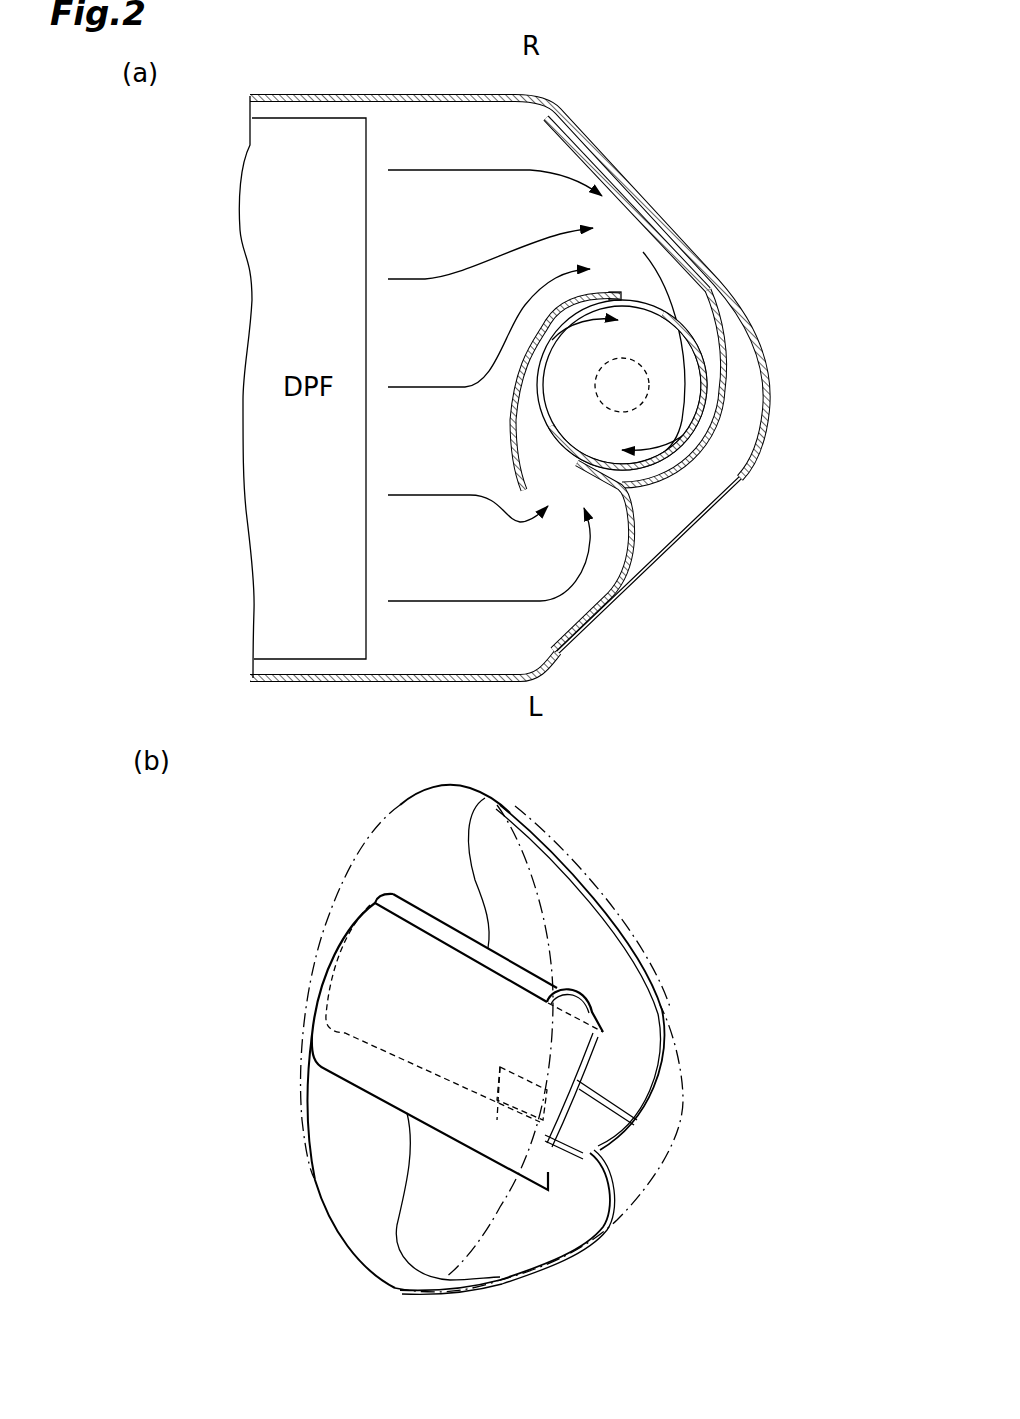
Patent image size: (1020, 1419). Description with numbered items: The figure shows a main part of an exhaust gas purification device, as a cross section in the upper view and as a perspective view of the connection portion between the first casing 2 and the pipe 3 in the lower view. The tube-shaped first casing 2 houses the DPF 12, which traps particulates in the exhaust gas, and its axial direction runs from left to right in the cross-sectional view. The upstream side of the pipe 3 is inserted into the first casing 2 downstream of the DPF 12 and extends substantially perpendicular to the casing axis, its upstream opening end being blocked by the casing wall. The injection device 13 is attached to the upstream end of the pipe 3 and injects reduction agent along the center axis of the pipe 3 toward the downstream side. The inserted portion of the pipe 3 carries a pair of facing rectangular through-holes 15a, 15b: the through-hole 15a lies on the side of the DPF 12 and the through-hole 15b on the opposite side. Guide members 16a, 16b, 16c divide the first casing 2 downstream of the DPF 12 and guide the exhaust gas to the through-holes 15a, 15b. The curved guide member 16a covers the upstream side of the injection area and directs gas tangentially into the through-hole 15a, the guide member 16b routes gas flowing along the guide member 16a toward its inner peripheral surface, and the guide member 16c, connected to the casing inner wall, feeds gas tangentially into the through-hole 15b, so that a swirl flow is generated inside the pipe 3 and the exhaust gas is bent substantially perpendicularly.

The first casing 2 is at (424, 93).
The pipe 3 is at (646, 292).
The DPF 12 is at (307, 150).
The injection device 13 is at (624, 358).
The through-hole 15a is at (540, 457).
The through-hole 15b is at (722, 310).
The guide member 16a is at (518, 446).
The guide member 16b is at (560, 640).
The guide member 16c is at (548, 125).